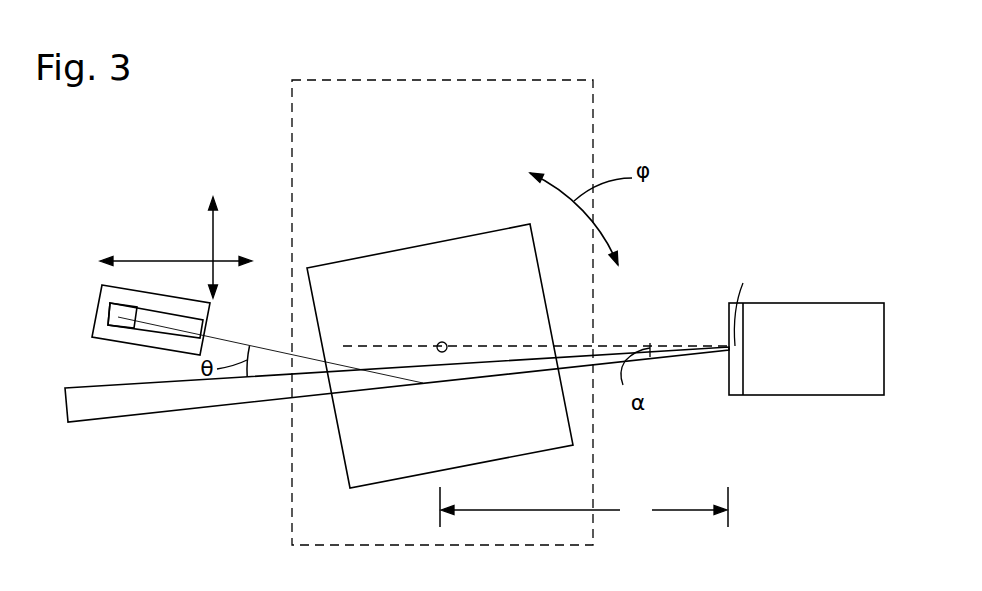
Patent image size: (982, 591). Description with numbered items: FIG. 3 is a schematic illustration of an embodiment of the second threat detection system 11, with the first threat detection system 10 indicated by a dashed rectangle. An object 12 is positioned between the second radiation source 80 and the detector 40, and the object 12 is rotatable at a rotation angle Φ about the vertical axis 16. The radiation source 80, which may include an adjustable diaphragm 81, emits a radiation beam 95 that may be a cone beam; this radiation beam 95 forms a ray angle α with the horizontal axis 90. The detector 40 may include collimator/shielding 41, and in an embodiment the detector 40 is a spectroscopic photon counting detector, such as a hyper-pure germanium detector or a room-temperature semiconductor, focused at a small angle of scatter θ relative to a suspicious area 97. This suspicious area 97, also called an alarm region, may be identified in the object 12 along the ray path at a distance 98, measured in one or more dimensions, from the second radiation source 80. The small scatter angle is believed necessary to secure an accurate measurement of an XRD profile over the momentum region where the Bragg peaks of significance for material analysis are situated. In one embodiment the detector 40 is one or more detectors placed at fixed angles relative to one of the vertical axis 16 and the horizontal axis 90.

The first threat detection system 10 is at (478, 79).
The second threat detection system 11 is at (732, 106).
The object 12 is at (406, 295).
The vertical axis 16 is at (448, 336).
The detector 40 is at (118, 318).
The collimator/shielding 41 is at (110, 333).
The second radiation source 80 is at (795, 350).
The adjustable diaphragm 81 is at (750, 302).
The horizontal axis 90 is at (629, 345).
The radiation beam 95 is at (688, 356).
The suspicious area 97 is at (429, 390).
The distance 98 is at (584, 507).